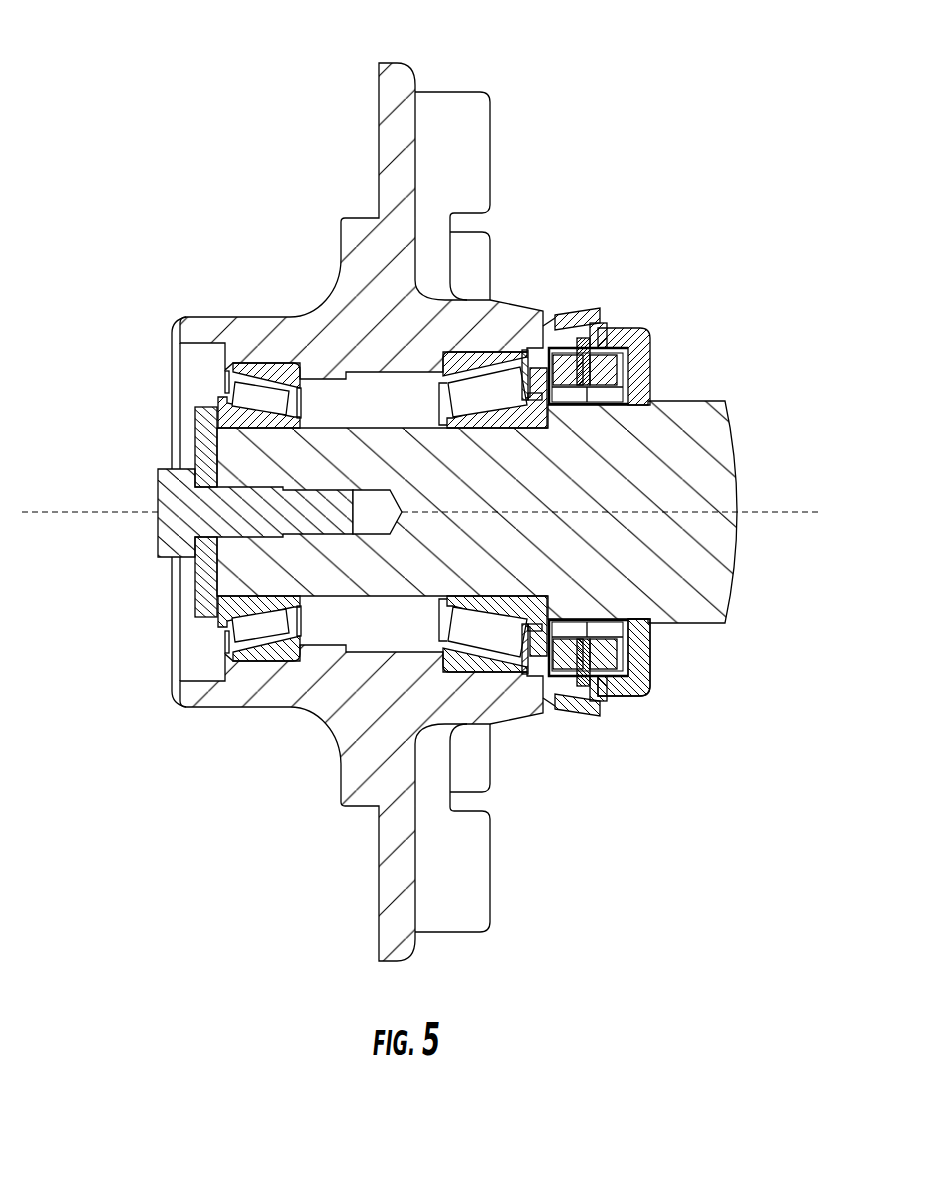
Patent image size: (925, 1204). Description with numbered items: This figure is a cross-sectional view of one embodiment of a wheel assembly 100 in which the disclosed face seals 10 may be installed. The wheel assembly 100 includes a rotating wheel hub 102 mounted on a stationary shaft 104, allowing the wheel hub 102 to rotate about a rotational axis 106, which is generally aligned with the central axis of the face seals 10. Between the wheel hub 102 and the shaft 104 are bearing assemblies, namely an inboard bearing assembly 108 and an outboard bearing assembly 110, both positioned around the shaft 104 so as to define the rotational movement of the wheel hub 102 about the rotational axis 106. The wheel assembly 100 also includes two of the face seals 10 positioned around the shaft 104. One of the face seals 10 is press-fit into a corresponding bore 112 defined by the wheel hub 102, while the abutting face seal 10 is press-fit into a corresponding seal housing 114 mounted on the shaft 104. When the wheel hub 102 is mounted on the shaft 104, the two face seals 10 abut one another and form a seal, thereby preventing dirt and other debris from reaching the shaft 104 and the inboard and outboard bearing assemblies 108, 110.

The wheel assembly 100 is at (131, 110).
The wheel hub 102 is at (360, 283).
The shaft 104 is at (712, 577).
The rotational axis 106 is at (108, 513).
The inboard bearing assembly 108 is at (487, 645).
The outboard bearing assembly 110 is at (262, 635).
The bore 112 is at (525, 348).
The seal housing 114 is at (640, 660).
The face seal 10 is at (584, 362).